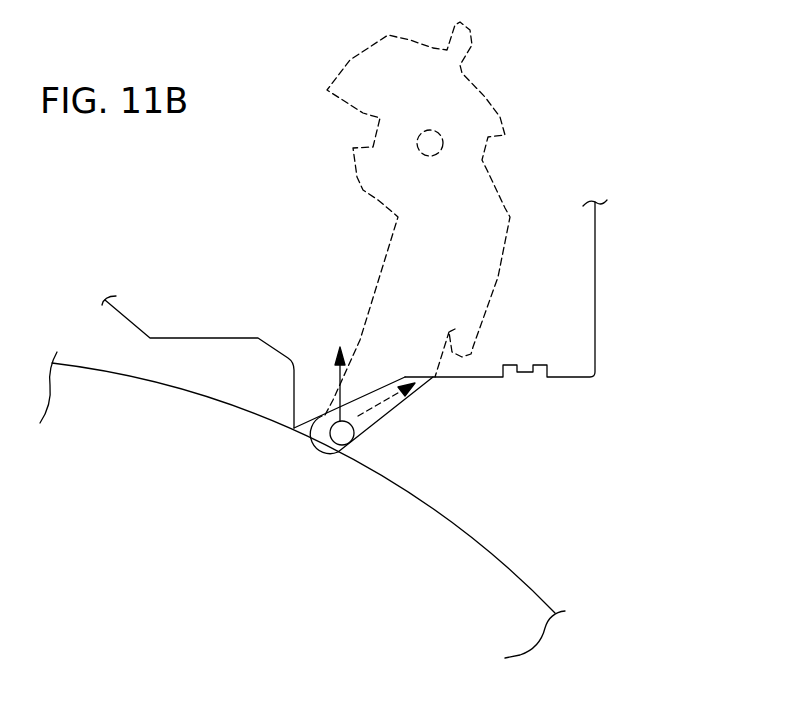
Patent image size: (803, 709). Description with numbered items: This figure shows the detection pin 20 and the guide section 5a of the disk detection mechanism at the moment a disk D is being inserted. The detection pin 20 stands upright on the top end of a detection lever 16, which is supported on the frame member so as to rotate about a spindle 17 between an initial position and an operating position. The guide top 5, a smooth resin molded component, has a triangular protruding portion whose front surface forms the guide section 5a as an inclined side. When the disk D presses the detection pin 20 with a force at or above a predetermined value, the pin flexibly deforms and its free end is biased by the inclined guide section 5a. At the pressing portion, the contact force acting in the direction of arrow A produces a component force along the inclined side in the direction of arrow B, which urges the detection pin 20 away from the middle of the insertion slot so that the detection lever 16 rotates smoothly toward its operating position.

The guide top 5 is at (582, 235).
The guide section 5a is at (310, 427).
The detection lever 16 is at (495, 278).
The spindle 17 is at (430, 143).
The detection pin 20 is at (347, 425).
The direction of arrow A is at (340, 372).
The direction of arrow B is at (390, 402).
The disk D is at (483, 545).